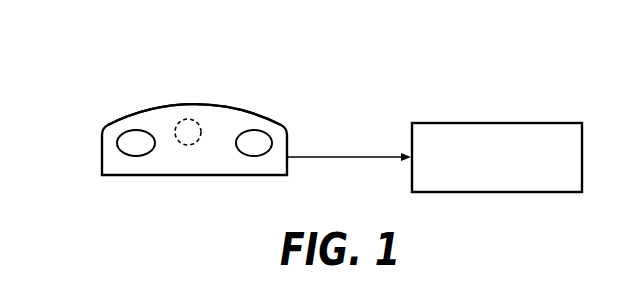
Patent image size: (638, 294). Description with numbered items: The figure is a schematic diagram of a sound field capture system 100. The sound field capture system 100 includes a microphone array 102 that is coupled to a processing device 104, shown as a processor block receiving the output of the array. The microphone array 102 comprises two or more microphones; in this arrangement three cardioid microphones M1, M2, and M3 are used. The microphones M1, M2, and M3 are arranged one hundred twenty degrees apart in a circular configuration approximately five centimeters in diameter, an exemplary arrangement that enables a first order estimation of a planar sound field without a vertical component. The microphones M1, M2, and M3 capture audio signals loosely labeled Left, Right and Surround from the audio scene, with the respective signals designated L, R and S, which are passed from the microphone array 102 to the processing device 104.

The sound field capture system 100 is at (102, 61).
The microphone array 102 is at (242, 108).
The processing device 104 is at (487, 123).
The cardioid microphone M1 is at (127, 143).
The cardioid microphone M2 is at (262, 138).
The cardioid microphone M3 is at (185, 120).